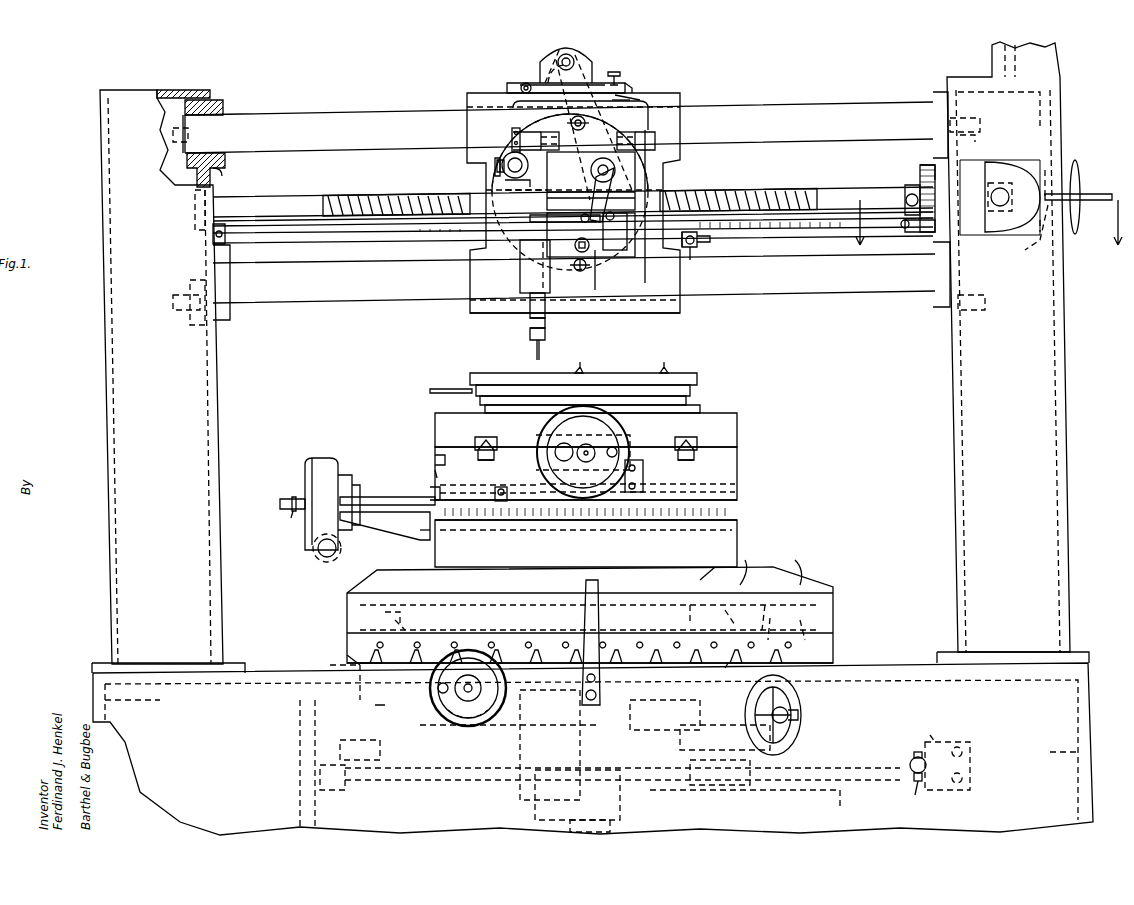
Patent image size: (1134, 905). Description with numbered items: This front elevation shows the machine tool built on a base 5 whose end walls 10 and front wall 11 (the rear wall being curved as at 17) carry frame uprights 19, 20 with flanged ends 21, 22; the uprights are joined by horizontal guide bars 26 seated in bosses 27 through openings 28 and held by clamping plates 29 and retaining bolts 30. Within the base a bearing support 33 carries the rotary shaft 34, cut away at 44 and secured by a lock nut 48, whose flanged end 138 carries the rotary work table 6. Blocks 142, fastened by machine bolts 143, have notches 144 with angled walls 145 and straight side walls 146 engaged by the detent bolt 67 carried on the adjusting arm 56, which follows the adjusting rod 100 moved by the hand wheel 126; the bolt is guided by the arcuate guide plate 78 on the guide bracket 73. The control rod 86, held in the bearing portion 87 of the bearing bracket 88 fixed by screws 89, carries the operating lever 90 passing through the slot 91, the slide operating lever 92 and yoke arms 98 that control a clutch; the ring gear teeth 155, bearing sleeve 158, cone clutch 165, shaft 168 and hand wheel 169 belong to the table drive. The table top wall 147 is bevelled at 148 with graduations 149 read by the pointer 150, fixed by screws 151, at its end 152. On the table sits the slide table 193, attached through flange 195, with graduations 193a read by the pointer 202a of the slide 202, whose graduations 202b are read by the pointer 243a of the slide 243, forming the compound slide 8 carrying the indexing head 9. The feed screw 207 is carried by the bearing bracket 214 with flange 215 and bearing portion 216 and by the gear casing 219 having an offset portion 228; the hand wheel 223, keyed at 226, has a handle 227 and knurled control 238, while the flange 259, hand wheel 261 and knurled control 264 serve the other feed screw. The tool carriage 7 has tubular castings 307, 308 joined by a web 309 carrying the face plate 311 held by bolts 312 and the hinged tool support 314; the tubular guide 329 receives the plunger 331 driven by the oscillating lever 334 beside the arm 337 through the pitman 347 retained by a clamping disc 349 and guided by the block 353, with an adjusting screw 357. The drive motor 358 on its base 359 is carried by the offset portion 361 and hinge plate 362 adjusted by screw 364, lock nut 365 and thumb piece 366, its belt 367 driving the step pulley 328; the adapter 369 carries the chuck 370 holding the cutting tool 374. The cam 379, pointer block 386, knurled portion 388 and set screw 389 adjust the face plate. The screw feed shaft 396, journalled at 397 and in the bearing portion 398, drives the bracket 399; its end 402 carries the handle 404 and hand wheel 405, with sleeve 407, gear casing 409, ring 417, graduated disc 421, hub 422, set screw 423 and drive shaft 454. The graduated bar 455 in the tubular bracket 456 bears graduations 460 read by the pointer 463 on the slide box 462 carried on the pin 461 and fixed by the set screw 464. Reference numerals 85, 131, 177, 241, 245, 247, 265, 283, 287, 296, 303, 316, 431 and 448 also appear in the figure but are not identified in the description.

The machine base 5 is at (275, 660).
The rotary work table 6 is at (845, 614).
The tool carriage 7 is at (677, 85).
The compound slide 8 is at (748, 466).
The indexing head 9 is at (710, 380).
The end walls 10 is at (591, 727).
The front wall 11 is at (1029, 708).
The arcuate curve of rear wall 17 is at (979, 227).
The frame upright 19 is at (1008, 347).
The frame upright 20 is at (161, 377).
The flanged end 21 is at (96, 662).
The flanged end 22 is at (1082, 650).
The horizontal guide bars 26 is at (823, 100).
The bosses 27 is at (225, 103).
The openings 28 is at (222, 176).
The clamping plates 29 is at (183, 160).
The retaining bolts 30 is at (170, 135).
The bearing support 33 is at (535, 748).
The rotary shaft 34 is at (581, 745).
The cut-away portion 44 is at (568, 800).
The lock nut 48 is at (615, 828).
The adjusting arm 56 is at (388, 621).
The detent bolt 67 is at (346, 664).
The guide bracket 73 is at (300, 728).
The arcuately curved guide plate 78 is at (383, 750).
The shaft 85 is at (315, 752).
The control rod 86 is at (445, 782).
The bearing portion 87 is at (933, 725).
The bearing bracket 88 is at (972, 762).
The screws 89 is at (965, 742).
The manual operating lever 90 is at (910, 770).
The vertical slot 91 is at (907, 794).
The slide operating lever 92 is at (348, 790).
The yoke arms 98 is at (755, 780).
The adjusting rod 100 is at (468, 700).
The hand wheel 126 is at (455, 718).
The index 131 is at (440, 693).
The flanged end 138 is at (660, 588).
The blocks 142 is at (838, 655).
The machine bolts 143 is at (771, 621).
The notch 144 is at (761, 608).
The angled side wall 145 is at (792, 624).
The side walls 146 is at (725, 636).
The top wall 147 is at (730, 590).
The bevel 148 is at (815, 568).
The graduations 149 is at (770, 580).
The pointer 150 is at (592, 610).
The screws 151 is at (585, 708).
The pointer end 152 is at (606, 560).
The external teeth 155 is at (549, 608).
The bearing sleeve 158 is at (665, 715).
The cone clutch 165 is at (712, 737).
The rotary shaft 168 is at (795, 730).
The hand wheel 169 is at (800, 712).
The shaft 177 is at (790, 810).
The slide table 193 is at (740, 525).
The graduations 193a is at (552, 528).
The flange 195 is at (662, 550).
The slide 202 is at (738, 480).
The pointer 202a is at (495, 487).
The graduations 202b is at (435, 475).
The feed screw 207 is at (378, 496).
The bearing bracket 214 is at (378, 525).
The flanged portion 215 is at (420, 533).
The bearing portion 216 is at (356, 484).
The gear casing 219 is at (328, 457).
The hand wheel 223 is at (310, 457).
The key 226 is at (705, 412).
The handle 227 is at (282, 497).
The offset portion 228 is at (325, 560).
The knurled control member 238 is at (291, 520).
The nut 241 is at (430, 490).
The slide 243 is at (740, 428).
The pointer 243a is at (435, 458).
The pointer 245 is at (486, 437).
The pointer base 247 is at (494, 458).
The flange 259 is at (645, 476).
The hand wheel 261 is at (617, 450).
The knurled hand control 264 is at (578, 433).
The plate 265 is at (690, 403).
The table top 283 is at (617, 378).
The clamp 287 is at (664, 362).
The plate 296 is at (690, 392).
The bar 303 is at (450, 387).
The tubular casting 307 is at (680, 98).
The tubular casting 308 is at (670, 316).
The web portion 309 is at (663, 172).
The adjustable face plate 311 is at (620, 268).
The anchoring bolts 312 is at (578, 272).
The hinged tool supporting plate 314 is at (602, 286).
The guide 316 is at (547, 136).
The step pulley 328 is at (569, 144).
The tubular guide 329 is at (520, 272).
The reciprocating plunger 331 is at (530, 294).
The oscillating lever 334 is at (565, 225).
The depending arm 337 is at (585, 198).
The pitman 347 is at (620, 190).
The clamping disc 349 is at (591, 172).
The guide block 353 is at (616, 231).
The adjusting screw 357 is at (575, 246).
The drive motor 358 is at (540, 62).
The motor base 359 is at (518, 85).
The offset portion 361 is at (632, 100).
The hinge plate 362 is at (515, 92).
The adjusting screw 364 is at (645, 96).
The lock nut 365 is at (632, 82).
The thumb piece 366 is at (614, 72).
The pulley belt 367 is at (536, 76).
The adapter 369 is at (548, 322).
The tool holding chuck 370 is at (530, 335).
The cutting tool 374 is at (541, 350).
The adjusting cam 379 is at (508, 152).
The pointer block 386 is at (512, 128).
The knurled portion 388 is at (508, 186).
The knurled set screw 389 is at (495, 168).
The screw feed shaft 396 is at (356, 196).
The journal 397 is at (195, 197).
The bearing portion 398 is at (985, 160).
The bracket member 399 is at (520, 240).
The free end 402 is at (1065, 235).
The hand wheel 404 is at (1082, 165).
The manual operating hand wheel 405 is at (1100, 186).
The sleeve 407 is at (932, 165).
The gear casing 409 is at (1003, 205).
The ring-like member 417 is at (920, 238).
The graduated disc 421 is at (918, 168).
The hub 422 is at (906, 183).
The knurled set screw 423 is at (905, 200).
The lever 431 is at (1034, 247).
The pin 448 is at (1005, 205).
The drive shaft 454 is at (1012, 112).
The graduated bar 455 is at (420, 238).
The tubular bracket 456 is at (228, 241).
The graduations 460 is at (806, 226).
The elongated pin 461 is at (705, 245).
The adjustable slide box 462 is at (692, 258).
The pointer 463 is at (700, 228).
The set screw 464 is at (684, 250).